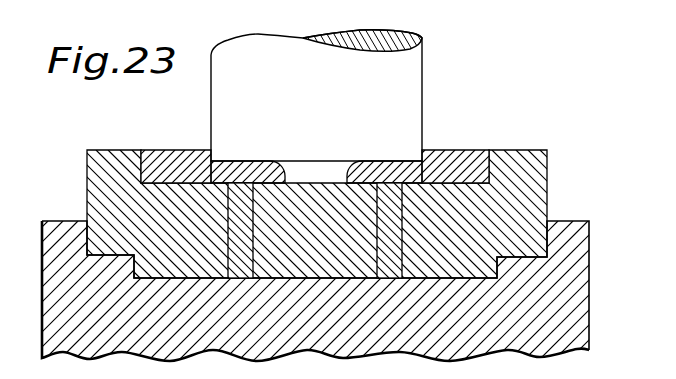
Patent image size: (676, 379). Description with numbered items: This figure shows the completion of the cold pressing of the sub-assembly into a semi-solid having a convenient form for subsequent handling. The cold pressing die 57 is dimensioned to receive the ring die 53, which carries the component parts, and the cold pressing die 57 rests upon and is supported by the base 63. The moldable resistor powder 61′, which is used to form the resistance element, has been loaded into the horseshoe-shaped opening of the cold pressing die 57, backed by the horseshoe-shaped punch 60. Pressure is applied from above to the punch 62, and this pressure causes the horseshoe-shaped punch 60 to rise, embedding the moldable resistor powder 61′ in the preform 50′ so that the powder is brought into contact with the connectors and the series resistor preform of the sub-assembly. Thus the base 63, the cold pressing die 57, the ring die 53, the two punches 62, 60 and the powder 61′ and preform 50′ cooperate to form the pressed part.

The ring die 53 is at (160, 150).
The preform 50′ is at (260, 165).
The moldable resistor powder 61′ is at (377, 183).
The horseshoe-shaped punch 60 is at (388, 222).
The punch 62 is at (422, 77).
The cold pressing die 57 is at (548, 193).
The base 63 is at (590, 275).